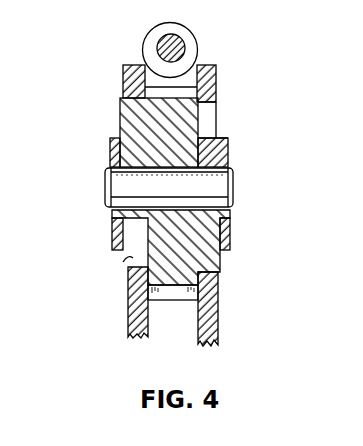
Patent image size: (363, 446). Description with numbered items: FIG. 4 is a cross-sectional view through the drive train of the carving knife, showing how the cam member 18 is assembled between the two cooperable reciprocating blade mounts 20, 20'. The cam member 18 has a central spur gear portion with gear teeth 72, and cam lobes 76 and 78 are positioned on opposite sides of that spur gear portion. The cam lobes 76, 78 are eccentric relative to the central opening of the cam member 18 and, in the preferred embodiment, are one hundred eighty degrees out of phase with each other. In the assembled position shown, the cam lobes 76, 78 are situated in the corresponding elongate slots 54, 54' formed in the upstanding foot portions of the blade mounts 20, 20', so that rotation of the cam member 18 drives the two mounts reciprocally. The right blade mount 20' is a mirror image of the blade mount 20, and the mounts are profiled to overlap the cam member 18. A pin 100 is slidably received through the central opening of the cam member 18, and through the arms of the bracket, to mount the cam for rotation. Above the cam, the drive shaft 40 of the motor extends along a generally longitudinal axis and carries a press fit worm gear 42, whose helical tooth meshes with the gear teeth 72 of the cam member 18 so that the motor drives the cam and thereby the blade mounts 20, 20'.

The cam member 18 is at (206, 126).
The reciprocating blade mount 20 is at (95, 307).
The right blade mount 20' is at (261, 309).
The drive shaft 40 is at (183, 37).
The worm gear 42 is at (120, 46).
The elongate slot 54 is at (99, 247).
The elongate slot 54' is at (234, 86).
The gear teeth 72 is at (172, 292).
The cam lobe 76 is at (129, 126).
The cam lobe 78 is at (216, 258).
The pin 100 is at (222, 183).